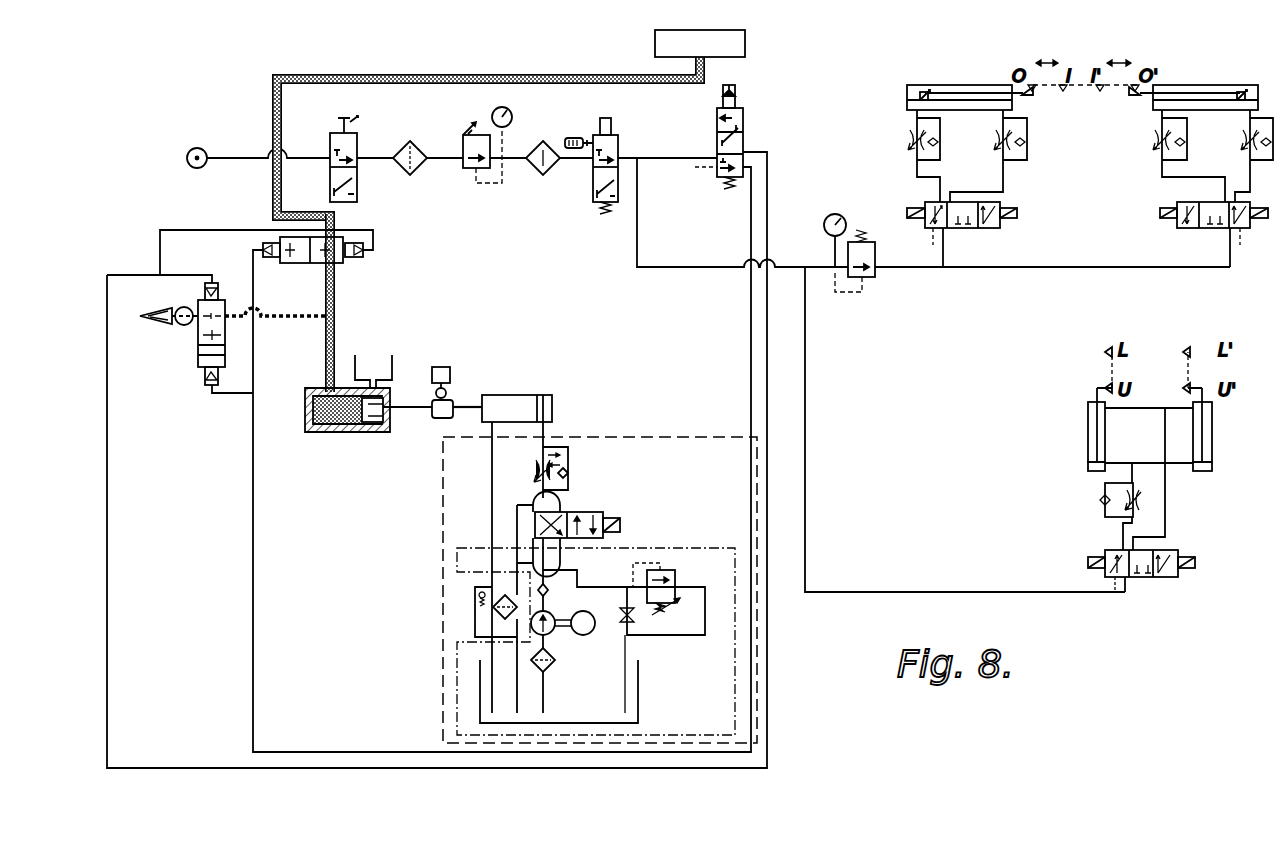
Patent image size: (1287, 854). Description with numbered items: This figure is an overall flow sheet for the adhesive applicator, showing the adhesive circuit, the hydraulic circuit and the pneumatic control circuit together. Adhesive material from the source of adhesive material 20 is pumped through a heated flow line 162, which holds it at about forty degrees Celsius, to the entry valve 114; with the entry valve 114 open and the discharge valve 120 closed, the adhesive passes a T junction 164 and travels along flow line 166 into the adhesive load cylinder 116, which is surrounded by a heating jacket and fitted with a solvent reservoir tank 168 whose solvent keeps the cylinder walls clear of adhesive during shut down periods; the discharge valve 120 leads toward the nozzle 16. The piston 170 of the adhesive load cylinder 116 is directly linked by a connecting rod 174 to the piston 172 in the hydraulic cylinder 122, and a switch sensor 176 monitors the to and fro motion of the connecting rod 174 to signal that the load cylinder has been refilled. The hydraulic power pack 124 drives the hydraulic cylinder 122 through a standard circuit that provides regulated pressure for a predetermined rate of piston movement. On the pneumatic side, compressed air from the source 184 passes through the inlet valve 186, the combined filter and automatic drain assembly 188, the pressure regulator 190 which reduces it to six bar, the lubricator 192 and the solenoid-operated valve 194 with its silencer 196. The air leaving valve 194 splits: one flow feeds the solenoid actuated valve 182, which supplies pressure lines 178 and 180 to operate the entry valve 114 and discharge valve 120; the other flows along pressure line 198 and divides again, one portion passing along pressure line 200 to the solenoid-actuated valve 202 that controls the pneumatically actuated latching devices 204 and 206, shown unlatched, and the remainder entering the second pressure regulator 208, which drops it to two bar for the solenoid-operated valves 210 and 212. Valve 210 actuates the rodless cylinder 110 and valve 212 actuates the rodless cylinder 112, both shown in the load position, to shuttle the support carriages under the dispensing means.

The nozzle 16 is at (154, 344).
The source of adhesive material 20 is at (655, 44).
The rodless cylinder 110 is at (975, 70).
The rodless cylinder 112 is at (1215, 72).
The entry valve 114 is at (343, 262).
The adhesive load cylinder 116 is at (325, 432).
The discharge valve 120 is at (198, 355).
The hydraulic cylinder 122 is at (521, 400).
The hydraulic power pack 124 is at (732, 400).
The heated flow line 162 is at (495, 75).
The T junction 164 is at (334, 316).
The flow line 166 is at (336, 363).
The solvent reservoir tank 168 is at (382, 368).
The piston 170 is at (386, 415).
The piston 172 is at (552, 400).
The connecting rod 174 is at (462, 404).
The switch sensor 176 is at (447, 368).
The pressure line 178 is at (107, 530).
The pressure line 180 is at (253, 530).
The solenoid actuated valve 182 is at (745, 145).
The source of compressed air 184 is at (260, 115).
The inlet valve 186 is at (350, 148).
The combined filter and automatic drain assembly 188 is at (421, 166).
The pressure regulator 190 is at (470, 170).
The lubricator 192 is at (562, 128).
The solenoid-operated valve 194 is at (620, 152).
The silencer 196 is at (580, 139).
The pressure line 198 is at (716, 243).
The pressure line 200 is at (805, 396).
The solenoid-actuated valve 202 is at (1175, 578).
The latching device 204 is at (1088, 447).
The latching device 206 is at (1212, 455).
The second pressure regulator 208 is at (870, 257).
The solenoid-operated valve 210 is at (1003, 227).
The solenoid-operated valve 212 is at (1250, 225).